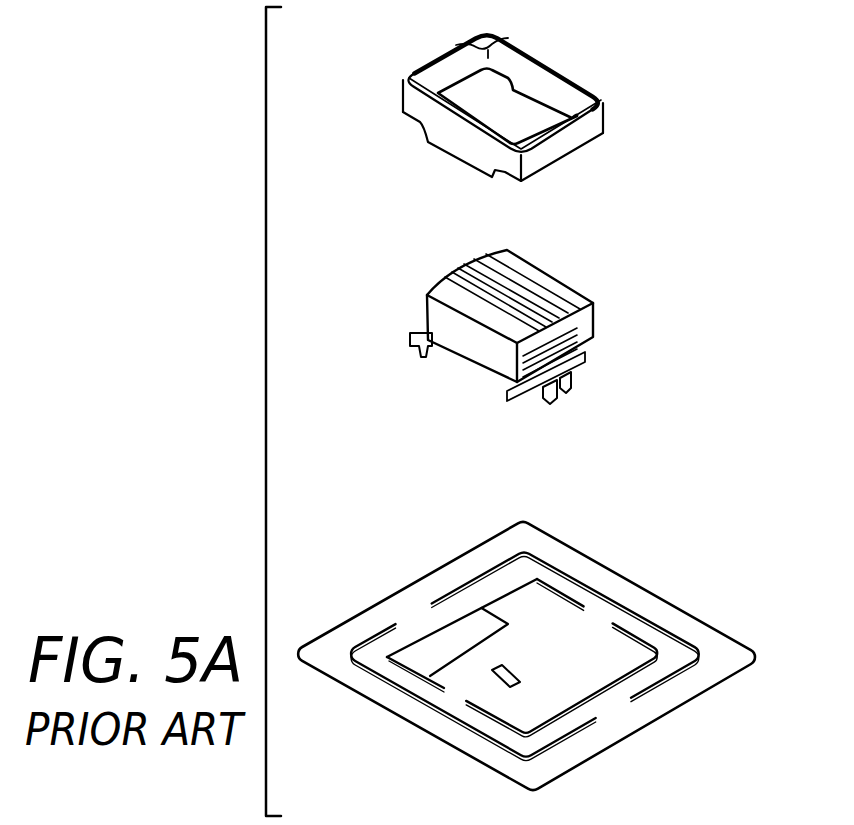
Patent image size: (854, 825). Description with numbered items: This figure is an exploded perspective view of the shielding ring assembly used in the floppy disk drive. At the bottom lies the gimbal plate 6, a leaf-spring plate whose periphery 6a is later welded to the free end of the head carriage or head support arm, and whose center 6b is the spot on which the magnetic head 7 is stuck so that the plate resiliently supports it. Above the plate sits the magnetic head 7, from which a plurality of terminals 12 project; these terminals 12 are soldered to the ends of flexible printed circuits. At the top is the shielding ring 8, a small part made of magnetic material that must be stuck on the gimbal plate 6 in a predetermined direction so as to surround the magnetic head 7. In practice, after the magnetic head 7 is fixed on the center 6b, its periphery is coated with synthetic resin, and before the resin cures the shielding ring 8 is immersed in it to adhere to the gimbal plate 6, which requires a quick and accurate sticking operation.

The gimbal plate 6 is at (647, 586).
The periphery 6a is at (680, 693).
The center 6b is at (543, 672).
The magnetic head 7 is at (485, 367).
The shielding ring 8 is at (570, 140).
The terminals 12 is at (424, 355).